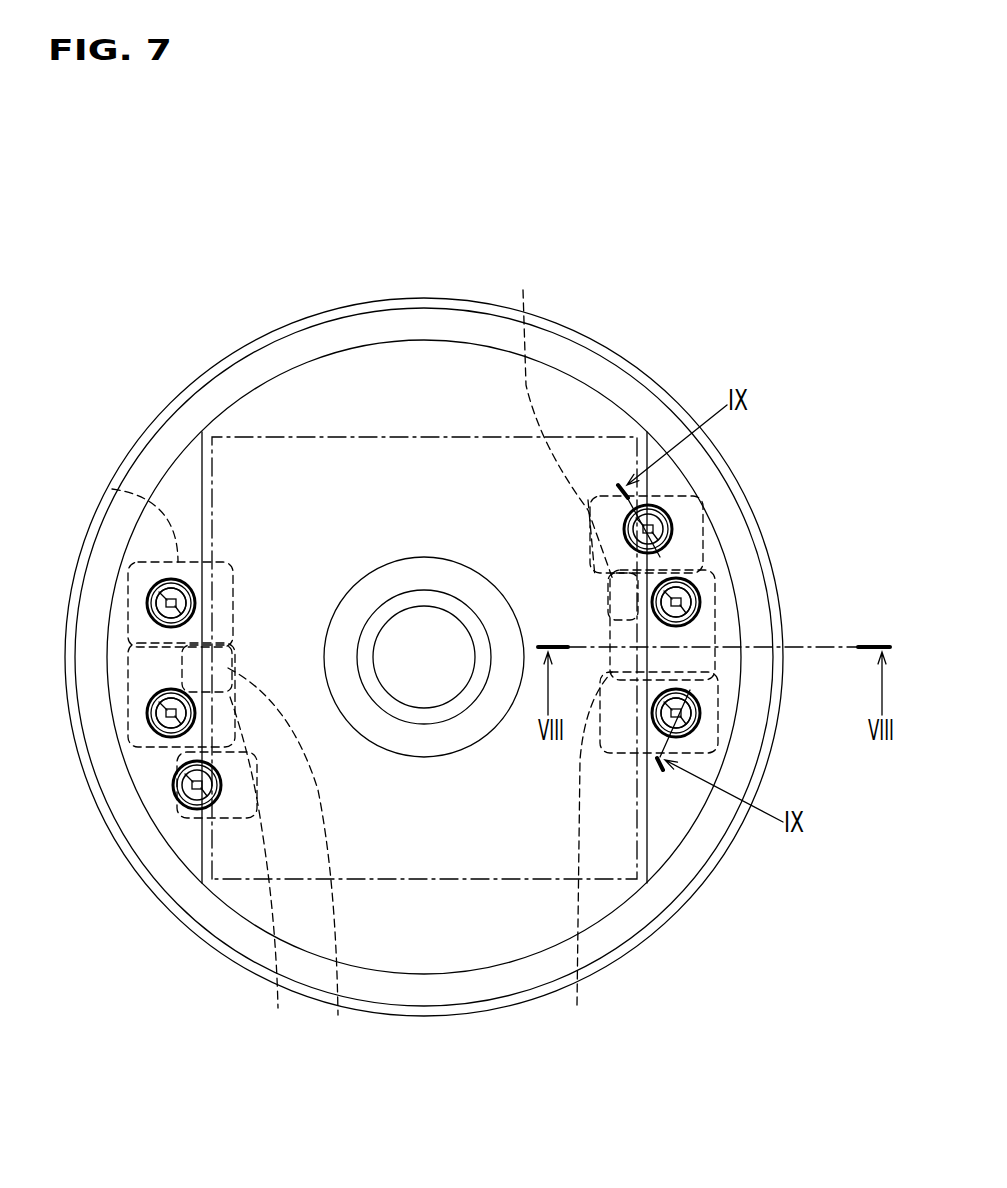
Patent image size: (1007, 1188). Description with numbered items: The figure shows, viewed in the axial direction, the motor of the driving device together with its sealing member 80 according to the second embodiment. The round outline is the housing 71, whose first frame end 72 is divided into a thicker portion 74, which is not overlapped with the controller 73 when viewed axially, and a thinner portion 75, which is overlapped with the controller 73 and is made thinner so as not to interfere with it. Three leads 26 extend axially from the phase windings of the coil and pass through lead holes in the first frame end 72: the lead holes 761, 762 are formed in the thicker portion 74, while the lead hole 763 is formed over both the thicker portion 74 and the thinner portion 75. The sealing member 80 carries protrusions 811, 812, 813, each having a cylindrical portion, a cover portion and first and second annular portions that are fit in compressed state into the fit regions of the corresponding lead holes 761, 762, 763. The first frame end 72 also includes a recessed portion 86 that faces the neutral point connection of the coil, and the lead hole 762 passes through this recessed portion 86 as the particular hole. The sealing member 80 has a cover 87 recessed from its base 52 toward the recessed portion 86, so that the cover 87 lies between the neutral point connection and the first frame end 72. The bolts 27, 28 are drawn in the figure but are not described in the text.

The housing 71 is at (173, 382).
The first frame end 72 is at (291, 323).
The controller 73 is at (592, 437).
The thicker portion 74 is at (173, 495).
The thinner portion 75 is at (232, 495).
The leads 26 is at (158, 582).
The fixing bolt 27 is at (150, 692).
The fixing bolt 28 is at (178, 790).
The protrusion 811 is at (150, 607).
The protrusion 812 is at (155, 705).
The protrusion 813 is at (197, 810).
The lead hole 761 is at (158, 622).
The lead hole 762 is at (155, 742).
The lead hole 763 is at (186, 806).
The sealing member 80 is at (209, 822).
The base 52 is at (112, 489).
The recessed portion 86 is at (421, 646).
The cover 87 is at (420, 773).